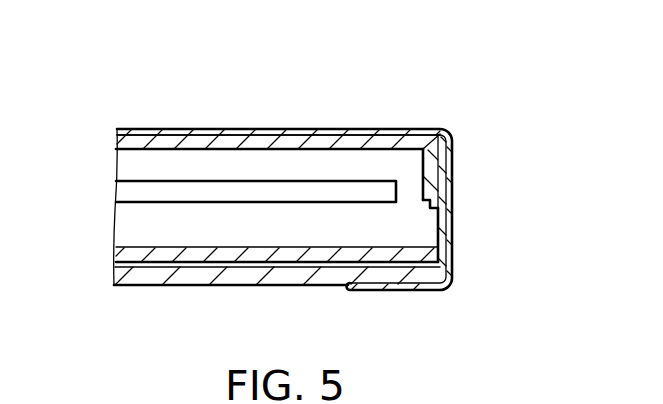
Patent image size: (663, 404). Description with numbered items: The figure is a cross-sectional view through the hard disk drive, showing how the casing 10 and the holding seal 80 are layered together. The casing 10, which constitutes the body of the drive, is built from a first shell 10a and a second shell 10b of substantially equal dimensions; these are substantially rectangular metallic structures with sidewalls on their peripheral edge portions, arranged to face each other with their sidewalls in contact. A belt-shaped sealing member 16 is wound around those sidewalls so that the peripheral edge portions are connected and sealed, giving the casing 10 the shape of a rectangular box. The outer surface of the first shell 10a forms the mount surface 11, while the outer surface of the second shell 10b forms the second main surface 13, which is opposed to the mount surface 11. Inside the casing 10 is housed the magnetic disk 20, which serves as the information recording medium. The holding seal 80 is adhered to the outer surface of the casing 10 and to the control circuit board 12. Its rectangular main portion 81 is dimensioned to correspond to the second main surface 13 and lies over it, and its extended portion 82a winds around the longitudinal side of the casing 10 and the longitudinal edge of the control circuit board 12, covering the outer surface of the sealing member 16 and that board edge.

The casing 10 is at (285, 124).
The first shell 10a is at (333, 285).
The second shell 10b is at (348, 128).
The mount surface 11 is at (250, 262).
The control circuit board 12 is at (177, 277).
The second main surface 13 is at (190, 128).
The sealing member 16 is at (455, 191).
The magnetic disk 20 is at (251, 190).
The holding seal 80 is at (398, 128).
The main portion 81 is at (143, 128).
The extended portion 82a is at (455, 240).